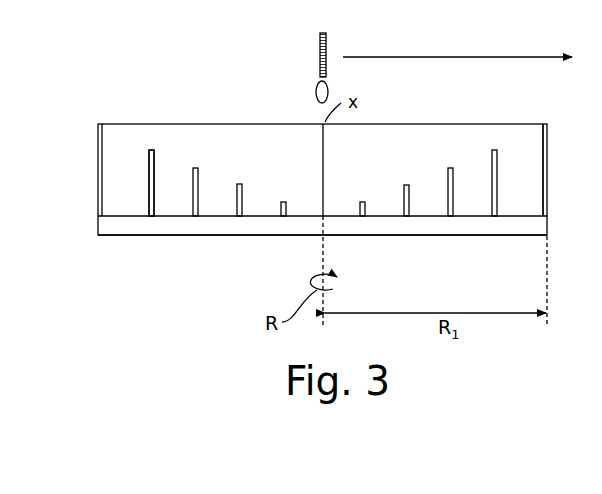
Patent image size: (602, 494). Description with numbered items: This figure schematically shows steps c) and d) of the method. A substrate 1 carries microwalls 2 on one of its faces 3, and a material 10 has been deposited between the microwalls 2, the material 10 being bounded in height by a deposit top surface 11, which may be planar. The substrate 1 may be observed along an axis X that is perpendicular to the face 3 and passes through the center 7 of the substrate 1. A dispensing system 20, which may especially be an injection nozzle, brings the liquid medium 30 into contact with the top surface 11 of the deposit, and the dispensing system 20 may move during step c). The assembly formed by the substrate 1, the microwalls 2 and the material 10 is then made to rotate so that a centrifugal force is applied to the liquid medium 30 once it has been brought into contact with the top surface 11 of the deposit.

The substrate 1 is at (417, 223).
The microwalls 2 is at (548, 160).
The face 3 is at (540, 215).
The center 7 is at (320, 218).
The material 10 is at (425, 138).
The deposit top surface 11 is at (152, 124).
The dispensing system 20 is at (318, 48).
The liquid medium 30 is at (315, 92).